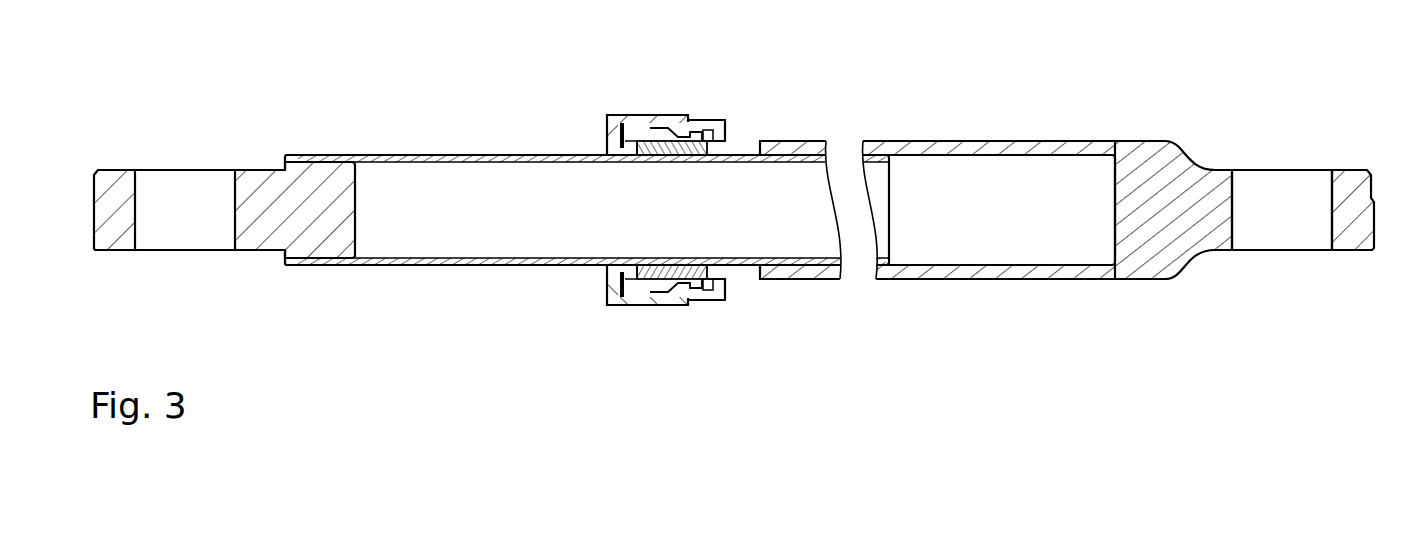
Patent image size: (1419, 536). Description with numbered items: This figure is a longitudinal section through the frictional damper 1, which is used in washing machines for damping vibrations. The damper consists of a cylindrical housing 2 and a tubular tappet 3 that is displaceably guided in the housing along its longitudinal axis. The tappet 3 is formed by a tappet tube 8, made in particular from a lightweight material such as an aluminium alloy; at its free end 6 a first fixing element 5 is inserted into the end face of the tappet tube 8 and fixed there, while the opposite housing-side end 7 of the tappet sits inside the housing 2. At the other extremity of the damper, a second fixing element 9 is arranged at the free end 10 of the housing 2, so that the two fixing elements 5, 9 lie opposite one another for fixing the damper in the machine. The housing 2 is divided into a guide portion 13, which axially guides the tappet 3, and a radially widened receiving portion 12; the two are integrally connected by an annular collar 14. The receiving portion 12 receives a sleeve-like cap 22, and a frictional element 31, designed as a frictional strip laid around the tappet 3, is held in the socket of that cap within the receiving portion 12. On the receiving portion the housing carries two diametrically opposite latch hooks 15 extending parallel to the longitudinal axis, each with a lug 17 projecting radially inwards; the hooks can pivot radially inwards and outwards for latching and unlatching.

The frictional damper 1 is at (845, 104).
The housing 2 is at (1024, 130).
The tappet 3 is at (406, 142).
The first fixing element 5 is at (117, 168).
The free end 6 is at (244, 160).
The housing-side end 7 is at (897, 170).
The tappet tube 8 is at (497, 158).
The second fixing element 9 is at (1342, 174).
The free end 10 is at (1269, 160).
The receiving portion 12 is at (699, 127).
The guide portion 13 is at (954, 147).
The annular collar 14 is at (724, 135).
The latch hook 15 is at (644, 303).
The lug 17 is at (681, 303).
The cap 22 is at (597, 129).
The frictional element 31 is at (651, 132).